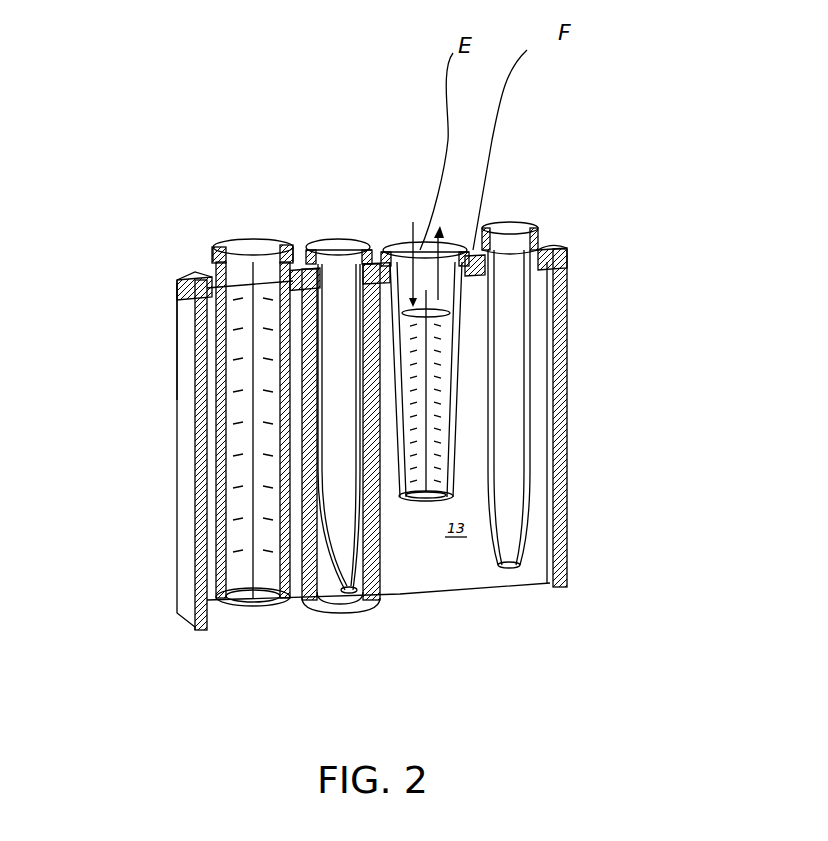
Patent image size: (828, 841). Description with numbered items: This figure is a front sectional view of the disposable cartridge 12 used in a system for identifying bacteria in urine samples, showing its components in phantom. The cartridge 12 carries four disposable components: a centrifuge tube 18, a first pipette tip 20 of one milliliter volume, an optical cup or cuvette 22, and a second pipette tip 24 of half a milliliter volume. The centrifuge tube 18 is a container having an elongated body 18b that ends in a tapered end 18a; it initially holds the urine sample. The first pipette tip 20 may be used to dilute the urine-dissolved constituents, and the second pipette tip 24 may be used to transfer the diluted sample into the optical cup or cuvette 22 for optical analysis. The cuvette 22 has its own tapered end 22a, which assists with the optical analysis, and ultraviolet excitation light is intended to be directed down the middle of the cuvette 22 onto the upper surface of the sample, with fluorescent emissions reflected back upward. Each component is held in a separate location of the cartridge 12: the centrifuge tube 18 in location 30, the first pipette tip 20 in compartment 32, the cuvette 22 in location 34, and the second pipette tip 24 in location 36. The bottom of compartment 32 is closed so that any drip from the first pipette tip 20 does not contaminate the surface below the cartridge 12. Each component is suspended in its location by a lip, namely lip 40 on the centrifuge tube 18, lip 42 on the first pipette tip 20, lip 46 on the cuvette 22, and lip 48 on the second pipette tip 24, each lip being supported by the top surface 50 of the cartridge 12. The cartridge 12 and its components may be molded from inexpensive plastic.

The disposable cartridge 12 is at (600, 346).
The centrifuge tube 18 is at (242, 240).
The tapered end 18a is at (240, 603).
The elongated body 18b is at (240, 510).
The first pipette tip 20 is at (347, 250).
The optical cup or cuvette 22 is at (437, 250).
The tapered end 22a is at (420, 500).
The second pipette tip 24 is at (515, 230).
The location 30 is at (233, 310).
The compartment 32 is at (368, 250).
The location 34 is at (467, 250).
The location 36 is at (563, 248).
The lip 40 is at (187, 273).
The lip 42 is at (297, 253).
The lip 46 is at (393, 250).
The lip 48 is at (500, 250).
The top surface 50 is at (177, 293).